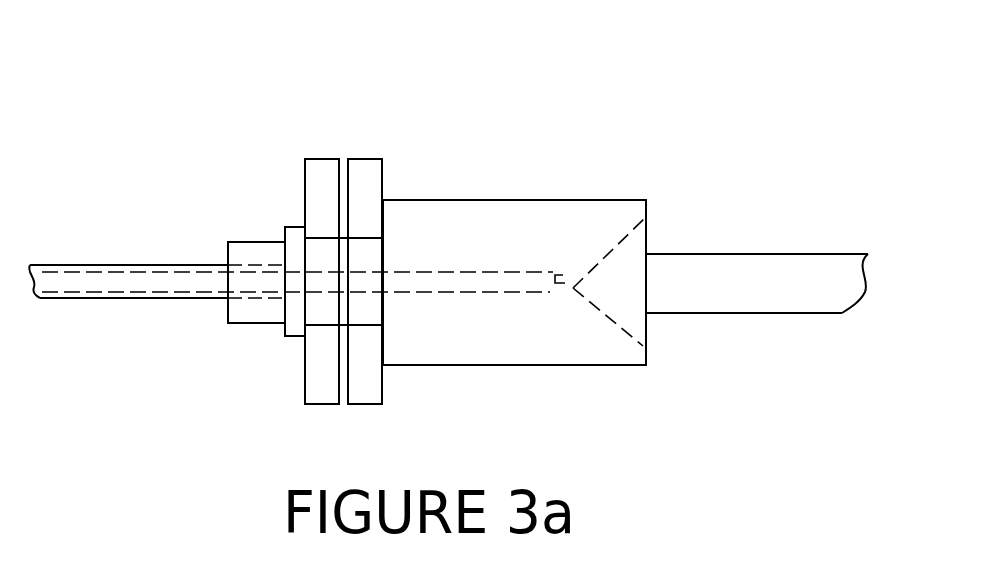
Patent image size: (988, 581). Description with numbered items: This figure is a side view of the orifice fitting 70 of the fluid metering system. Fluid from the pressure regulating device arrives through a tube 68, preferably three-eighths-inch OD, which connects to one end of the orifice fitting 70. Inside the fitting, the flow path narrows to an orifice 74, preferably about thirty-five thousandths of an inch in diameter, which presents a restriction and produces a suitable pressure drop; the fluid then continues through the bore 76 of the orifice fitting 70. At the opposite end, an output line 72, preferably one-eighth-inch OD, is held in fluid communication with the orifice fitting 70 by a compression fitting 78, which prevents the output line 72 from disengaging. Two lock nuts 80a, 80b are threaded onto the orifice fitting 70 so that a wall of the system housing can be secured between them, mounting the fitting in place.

The tube 68 is at (740, 295).
The orifice fitting 70 is at (620, 75).
The output line 72 is at (115, 298).
The orifice 74 is at (573, 287).
The bore 76 is at (475, 283).
The compression fitting 78 is at (250, 256).
The lock nut 80a is at (326, 176).
The lock nut 80b is at (370, 176).